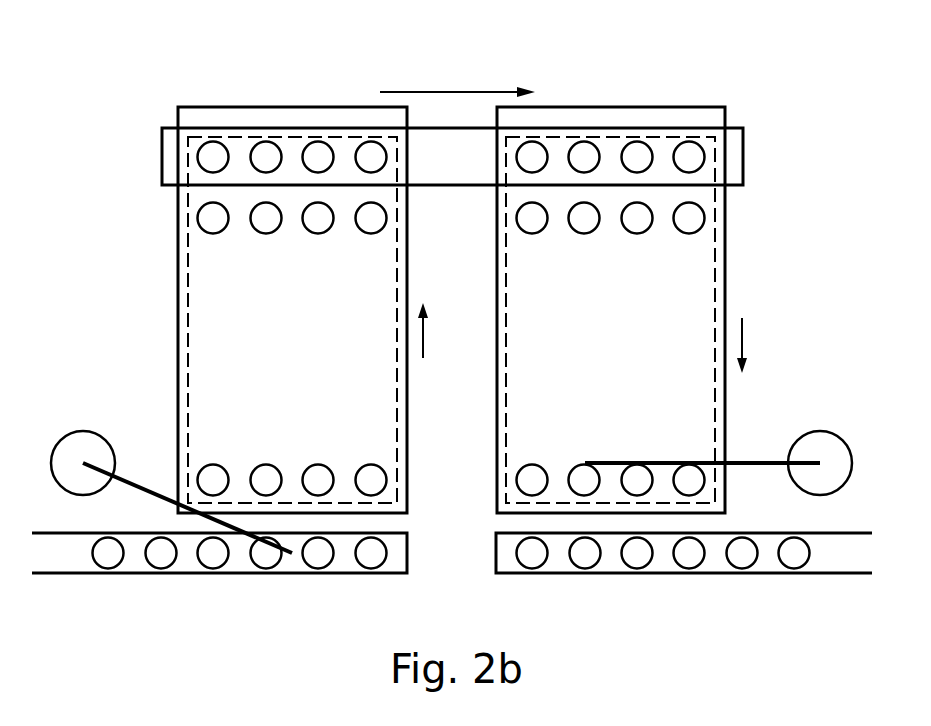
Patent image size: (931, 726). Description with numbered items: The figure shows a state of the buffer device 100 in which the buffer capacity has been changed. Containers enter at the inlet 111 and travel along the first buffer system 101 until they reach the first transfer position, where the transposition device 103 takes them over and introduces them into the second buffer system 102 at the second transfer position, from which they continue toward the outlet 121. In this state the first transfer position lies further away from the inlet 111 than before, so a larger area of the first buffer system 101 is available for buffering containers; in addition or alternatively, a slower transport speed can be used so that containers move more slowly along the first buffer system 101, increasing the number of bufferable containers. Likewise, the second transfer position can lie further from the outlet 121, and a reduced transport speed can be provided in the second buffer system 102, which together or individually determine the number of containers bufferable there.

The buffer device 100 is at (782, 82).
The first buffer system 101 is at (178, 274).
The second buffer system 102 is at (726, 273).
The transposition device 103 is at (453, 186).
The inlet 111 is at (295, 574).
The outlet 121 is at (613, 574).